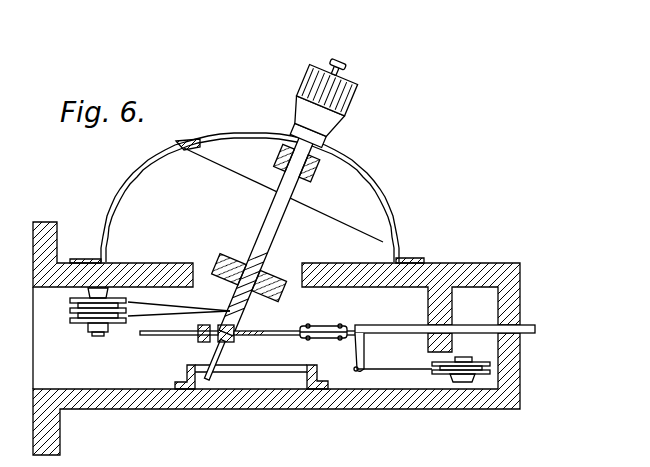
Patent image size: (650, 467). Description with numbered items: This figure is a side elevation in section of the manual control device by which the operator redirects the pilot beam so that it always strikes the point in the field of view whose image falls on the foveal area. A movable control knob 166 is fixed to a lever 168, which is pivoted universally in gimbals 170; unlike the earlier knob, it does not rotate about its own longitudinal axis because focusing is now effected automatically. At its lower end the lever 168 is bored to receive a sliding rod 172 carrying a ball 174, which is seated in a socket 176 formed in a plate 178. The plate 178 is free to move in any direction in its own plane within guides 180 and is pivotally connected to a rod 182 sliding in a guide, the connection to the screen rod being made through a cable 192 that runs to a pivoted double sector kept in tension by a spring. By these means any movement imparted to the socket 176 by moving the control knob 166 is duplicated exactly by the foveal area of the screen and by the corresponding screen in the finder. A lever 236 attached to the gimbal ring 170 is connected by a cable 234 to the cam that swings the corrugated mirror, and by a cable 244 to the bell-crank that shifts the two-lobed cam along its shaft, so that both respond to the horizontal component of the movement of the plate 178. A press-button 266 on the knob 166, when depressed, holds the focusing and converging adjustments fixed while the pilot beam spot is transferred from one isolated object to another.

The control knob 166 is at (362, 99).
The press-button 266 is at (340, 57).
The lever 168 is at (294, 185).
The gimbals 170 is at (282, 277).
The lever 236 is at (236, 292).
The cable 244 is at (153, 304).
The cable 234 is at (134, 314).
The plate 178 is at (163, 336).
The guides 180 is at (199, 342).
The socket 176 is at (233, 338).
The sliding rod 172 is at (237, 328).
The rod 182 is at (402, 328).
The cable 192 is at (398, 372).
The ball 174 is at (230, 338).